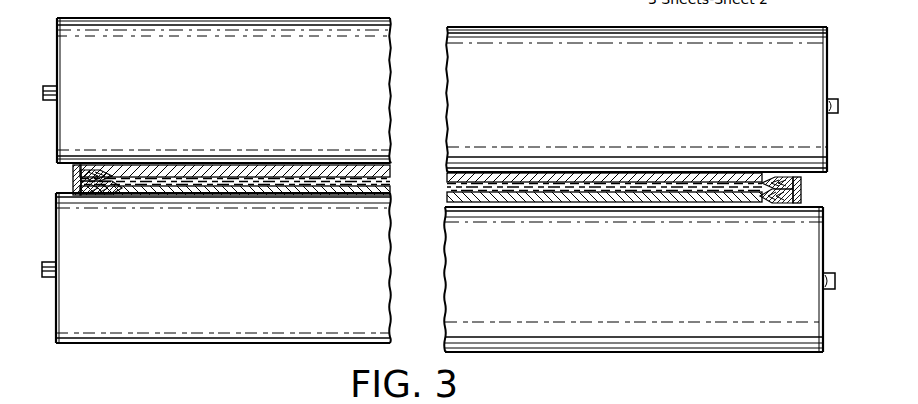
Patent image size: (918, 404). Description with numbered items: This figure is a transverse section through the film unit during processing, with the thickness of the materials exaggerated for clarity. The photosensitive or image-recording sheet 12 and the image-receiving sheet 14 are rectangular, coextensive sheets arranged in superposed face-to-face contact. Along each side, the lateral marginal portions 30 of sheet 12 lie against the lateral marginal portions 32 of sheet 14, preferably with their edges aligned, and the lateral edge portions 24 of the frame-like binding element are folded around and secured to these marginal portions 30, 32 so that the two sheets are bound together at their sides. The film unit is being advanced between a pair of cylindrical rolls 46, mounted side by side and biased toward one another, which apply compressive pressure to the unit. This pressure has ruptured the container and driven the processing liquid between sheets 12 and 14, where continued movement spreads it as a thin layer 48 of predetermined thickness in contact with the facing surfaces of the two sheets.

The photosensitive or image-recording sheet 12 is at (388, 192).
The image-receiving sheet 14 is at (388, 174).
The lateral edge portions 24 is at (73, 180).
The lateral marginal portions 30 is at (92, 196).
The lateral marginal portions 32 is at (93, 165).
The cylindrical rolls 46 is at (451, 85).
The thin layer 48 is at (280, 187).